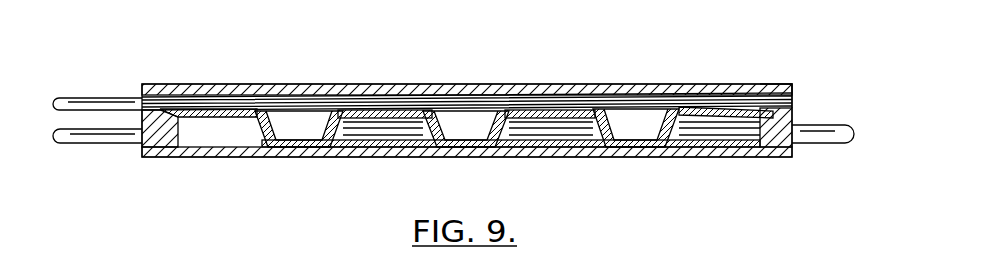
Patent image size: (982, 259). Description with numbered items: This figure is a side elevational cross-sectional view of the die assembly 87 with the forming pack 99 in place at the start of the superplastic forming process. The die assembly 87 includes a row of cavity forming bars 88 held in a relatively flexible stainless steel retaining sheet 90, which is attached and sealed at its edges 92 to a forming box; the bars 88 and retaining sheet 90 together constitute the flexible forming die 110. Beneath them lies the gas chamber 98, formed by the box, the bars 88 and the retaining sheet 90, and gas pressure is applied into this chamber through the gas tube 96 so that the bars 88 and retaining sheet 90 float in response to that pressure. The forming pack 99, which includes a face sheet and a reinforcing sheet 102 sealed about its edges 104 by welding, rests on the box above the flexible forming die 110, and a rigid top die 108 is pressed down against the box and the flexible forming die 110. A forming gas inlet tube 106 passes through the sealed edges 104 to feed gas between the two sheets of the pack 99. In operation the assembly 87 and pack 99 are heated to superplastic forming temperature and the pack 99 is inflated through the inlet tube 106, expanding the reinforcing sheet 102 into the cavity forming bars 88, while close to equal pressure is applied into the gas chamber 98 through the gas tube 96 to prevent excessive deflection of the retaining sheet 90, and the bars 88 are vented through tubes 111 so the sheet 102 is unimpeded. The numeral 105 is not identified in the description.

The die assembly 87 is at (889, 73).
The cavity forming bars 88 is at (313, 126).
The retaining sheet 90 is at (206, 131).
The edges 92 is at (742, 108).
The gas tube 96 is at (122, 143).
The gas chamber 98 is at (220, 139).
The forming pack 99 is at (172, 94).
The reinforcing sheet 102 is at (454, 148).
The edges 104 is at (793, 96).
The housing end 105 is at (779, 83).
The forming gas inlet tube 106 is at (128, 98).
The rigid top die 108 is at (331, 84).
The flexible forming die 110 is at (531, 116).
The tubes 111 is at (418, 140).